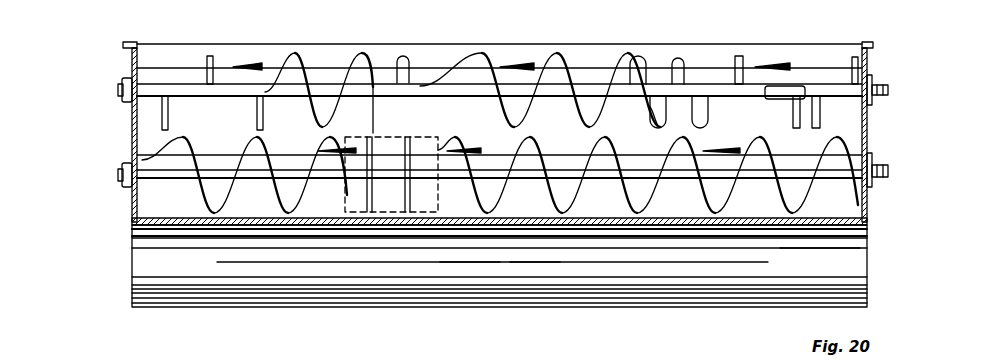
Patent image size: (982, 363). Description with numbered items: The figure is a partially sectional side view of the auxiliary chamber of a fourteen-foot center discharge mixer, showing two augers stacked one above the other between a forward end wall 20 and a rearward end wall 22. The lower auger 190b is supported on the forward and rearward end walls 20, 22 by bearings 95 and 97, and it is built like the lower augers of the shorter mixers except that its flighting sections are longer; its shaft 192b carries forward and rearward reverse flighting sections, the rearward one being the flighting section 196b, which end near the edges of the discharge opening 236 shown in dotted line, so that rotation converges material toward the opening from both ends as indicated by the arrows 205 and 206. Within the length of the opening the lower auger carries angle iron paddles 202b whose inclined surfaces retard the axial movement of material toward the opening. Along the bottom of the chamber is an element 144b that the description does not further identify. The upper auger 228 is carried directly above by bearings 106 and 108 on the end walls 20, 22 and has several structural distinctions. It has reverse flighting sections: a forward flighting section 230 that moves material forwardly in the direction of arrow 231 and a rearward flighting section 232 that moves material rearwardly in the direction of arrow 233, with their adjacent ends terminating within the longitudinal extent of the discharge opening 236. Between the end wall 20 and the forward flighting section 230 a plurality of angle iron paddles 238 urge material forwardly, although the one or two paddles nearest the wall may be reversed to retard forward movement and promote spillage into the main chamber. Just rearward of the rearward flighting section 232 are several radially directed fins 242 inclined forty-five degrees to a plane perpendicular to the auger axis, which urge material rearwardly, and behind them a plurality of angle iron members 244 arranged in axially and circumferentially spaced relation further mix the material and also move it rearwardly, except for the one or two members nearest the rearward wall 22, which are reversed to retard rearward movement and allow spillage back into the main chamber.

The forward end wall 20 is at (132, 138).
The rearward end wall 22 is at (867, 129).
The bearing 95 is at (127, 190).
The bearing 97 is at (866, 190).
The bearing 106 is at (122, 80).
The bearing 108 is at (870, 78).
The trough floor 144b is at (152, 198).
The lower auger 190b is at (543, 187).
The bottom panel 192b is at (807, 180).
The bottom plate 196b is at (488, 198).
The discharge pin 202b is at (377, 212).
The arrow 205 is at (190, 138).
The arrow 206 is at (587, 152).
The upper auger 228 is at (463, 80).
The forward flighting section 230 is at (353, 77).
The arrow 231 is at (268, 90).
The rearward flighting section 232 is at (533, 66).
The arrow 233 is at (607, 83).
The discharge opening 236 is at (400, 213).
The angle iron paddles 238 is at (240, 67).
The radially directed fins 242 is at (660, 117).
The angle iron members 244 is at (816, 125).